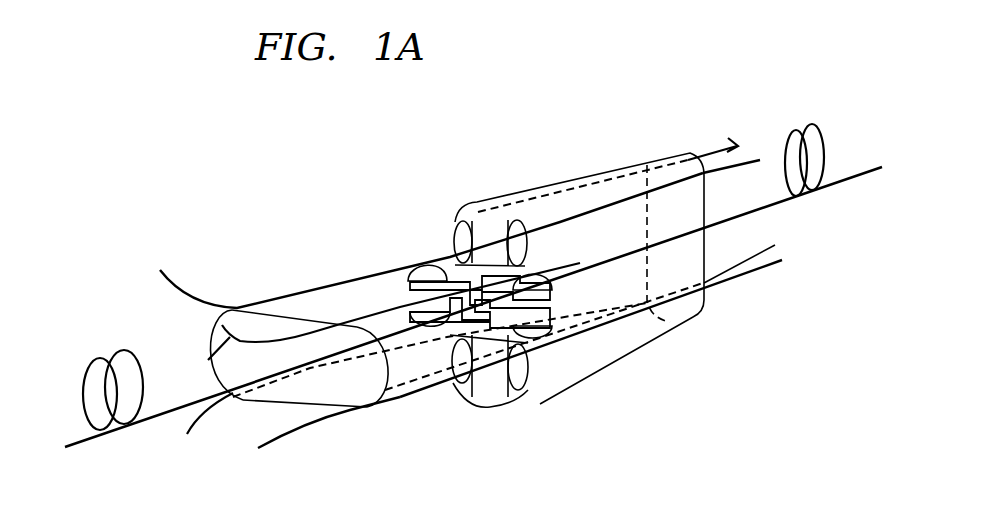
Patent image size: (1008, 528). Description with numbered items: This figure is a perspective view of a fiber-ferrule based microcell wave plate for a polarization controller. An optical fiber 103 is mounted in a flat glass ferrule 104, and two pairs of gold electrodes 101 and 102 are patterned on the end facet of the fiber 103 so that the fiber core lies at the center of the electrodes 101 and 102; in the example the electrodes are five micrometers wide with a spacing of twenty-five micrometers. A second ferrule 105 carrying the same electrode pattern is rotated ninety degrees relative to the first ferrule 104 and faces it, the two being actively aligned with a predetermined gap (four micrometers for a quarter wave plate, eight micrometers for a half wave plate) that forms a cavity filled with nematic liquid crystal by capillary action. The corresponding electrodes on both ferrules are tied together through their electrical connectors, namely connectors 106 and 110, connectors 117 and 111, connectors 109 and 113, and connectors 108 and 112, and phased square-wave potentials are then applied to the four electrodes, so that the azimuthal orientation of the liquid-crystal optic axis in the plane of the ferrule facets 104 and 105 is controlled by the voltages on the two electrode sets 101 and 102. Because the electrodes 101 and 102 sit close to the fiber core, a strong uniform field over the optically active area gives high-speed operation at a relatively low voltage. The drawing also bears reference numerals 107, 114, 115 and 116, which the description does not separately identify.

The gold electrodes 101 is at (447, 338).
The gold electrodes 102 is at (405, 262).
The optical fiber 103 is at (78, 446).
The flat glass ferrule 104 is at (647, 344).
The ferrule 105 is at (390, 395).
The electrical connector 106 is at (184, 266).
The input fiber 107 is at (210, 358).
The electrical connector 108 is at (280, 438).
The electrical connector 109 is at (190, 427).
The electrical connector 110 is at (728, 145).
The electrical connector 111 is at (757, 163).
The electrical connector 112 is at (744, 280).
The electrical connector 113 is at (740, 268).
The alignment pad 114 is at (413, 326).
The alignment pad 115 is at (432, 262).
The alignment pad 116 is at (540, 266).
The electrical connector 117 is at (540, 336).